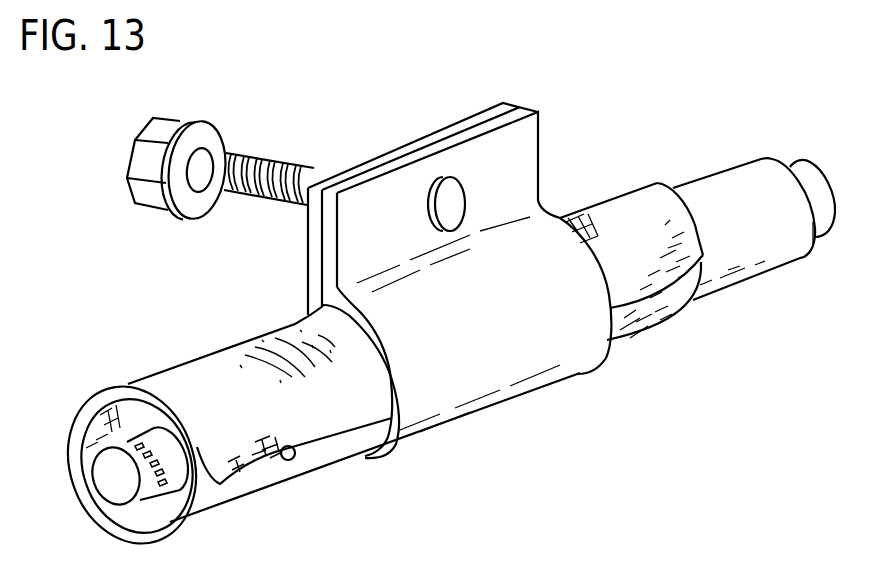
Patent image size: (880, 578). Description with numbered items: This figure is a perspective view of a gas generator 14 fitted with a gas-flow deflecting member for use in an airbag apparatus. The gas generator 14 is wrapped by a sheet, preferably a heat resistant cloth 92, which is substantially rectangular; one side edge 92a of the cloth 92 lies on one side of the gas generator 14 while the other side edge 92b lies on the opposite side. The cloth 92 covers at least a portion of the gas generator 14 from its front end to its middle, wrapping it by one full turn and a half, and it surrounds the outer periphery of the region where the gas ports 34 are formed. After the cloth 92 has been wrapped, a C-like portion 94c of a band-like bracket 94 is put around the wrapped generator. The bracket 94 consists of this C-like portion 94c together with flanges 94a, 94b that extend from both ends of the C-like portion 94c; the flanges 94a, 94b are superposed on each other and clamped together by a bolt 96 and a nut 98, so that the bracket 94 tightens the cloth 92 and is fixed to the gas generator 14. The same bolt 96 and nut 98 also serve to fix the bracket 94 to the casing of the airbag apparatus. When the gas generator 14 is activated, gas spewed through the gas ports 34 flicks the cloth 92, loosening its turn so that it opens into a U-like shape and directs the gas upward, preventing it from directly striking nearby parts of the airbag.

The gas generator 14 is at (707, 183).
The gas ports 34 is at (170, 518).
The heat resistant cloth 92 is at (331, 462).
The one side edge of the cloth 92a is at (92, 404).
The other side edge of the cloth 92b is at (286, 447).
The band-like bracket 94 is at (550, 352).
The flange 94a is at (527, 157).
The flange 94b is at (422, 137).
The C-like portion 94c is at (424, 422).
The bolt 96 is at (270, 207).
The nut 98 is at (154, 206).